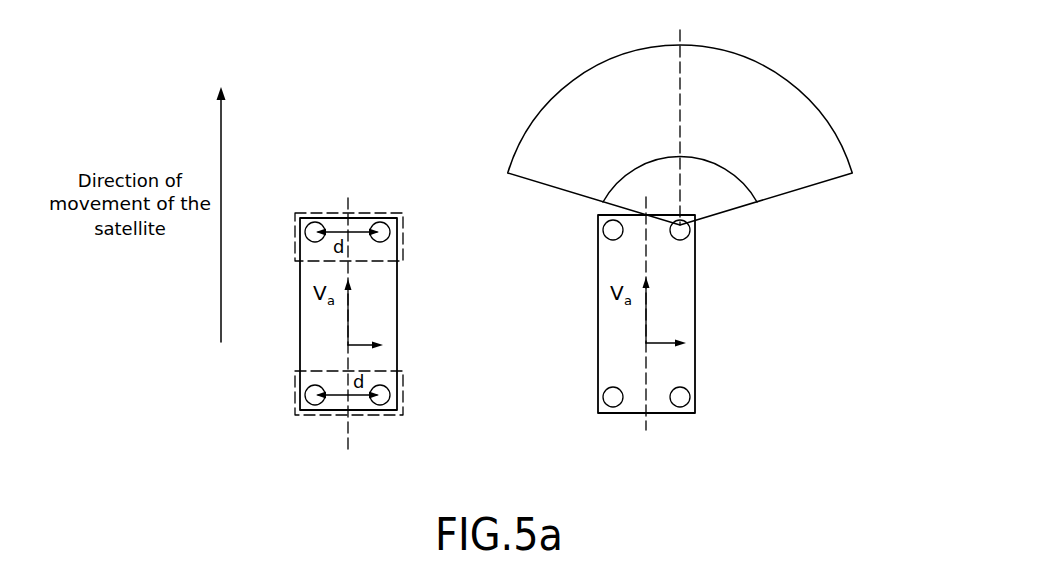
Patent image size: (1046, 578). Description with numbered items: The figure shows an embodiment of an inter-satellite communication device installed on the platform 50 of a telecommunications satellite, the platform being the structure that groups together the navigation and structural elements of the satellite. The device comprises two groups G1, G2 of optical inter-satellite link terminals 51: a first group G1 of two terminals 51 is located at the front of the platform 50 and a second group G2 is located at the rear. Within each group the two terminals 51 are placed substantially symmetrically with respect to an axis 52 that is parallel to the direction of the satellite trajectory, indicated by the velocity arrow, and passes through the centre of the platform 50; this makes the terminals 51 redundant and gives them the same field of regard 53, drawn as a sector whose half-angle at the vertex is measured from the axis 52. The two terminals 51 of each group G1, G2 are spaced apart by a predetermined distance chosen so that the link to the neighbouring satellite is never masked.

The platform 50 is at (300, 297).
The optical inter-satellite link terminal 51 is at (305, 232).
The axis 52 is at (348, 437).
The field of regard 53 is at (810, 100).
The first group of optical terminals G1 is at (403, 238).
The second group of optical terminals G2 is at (403, 393).